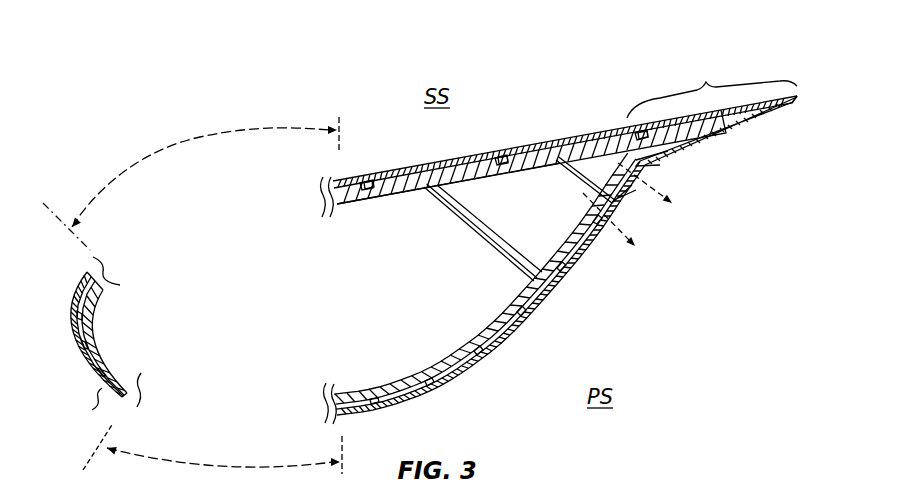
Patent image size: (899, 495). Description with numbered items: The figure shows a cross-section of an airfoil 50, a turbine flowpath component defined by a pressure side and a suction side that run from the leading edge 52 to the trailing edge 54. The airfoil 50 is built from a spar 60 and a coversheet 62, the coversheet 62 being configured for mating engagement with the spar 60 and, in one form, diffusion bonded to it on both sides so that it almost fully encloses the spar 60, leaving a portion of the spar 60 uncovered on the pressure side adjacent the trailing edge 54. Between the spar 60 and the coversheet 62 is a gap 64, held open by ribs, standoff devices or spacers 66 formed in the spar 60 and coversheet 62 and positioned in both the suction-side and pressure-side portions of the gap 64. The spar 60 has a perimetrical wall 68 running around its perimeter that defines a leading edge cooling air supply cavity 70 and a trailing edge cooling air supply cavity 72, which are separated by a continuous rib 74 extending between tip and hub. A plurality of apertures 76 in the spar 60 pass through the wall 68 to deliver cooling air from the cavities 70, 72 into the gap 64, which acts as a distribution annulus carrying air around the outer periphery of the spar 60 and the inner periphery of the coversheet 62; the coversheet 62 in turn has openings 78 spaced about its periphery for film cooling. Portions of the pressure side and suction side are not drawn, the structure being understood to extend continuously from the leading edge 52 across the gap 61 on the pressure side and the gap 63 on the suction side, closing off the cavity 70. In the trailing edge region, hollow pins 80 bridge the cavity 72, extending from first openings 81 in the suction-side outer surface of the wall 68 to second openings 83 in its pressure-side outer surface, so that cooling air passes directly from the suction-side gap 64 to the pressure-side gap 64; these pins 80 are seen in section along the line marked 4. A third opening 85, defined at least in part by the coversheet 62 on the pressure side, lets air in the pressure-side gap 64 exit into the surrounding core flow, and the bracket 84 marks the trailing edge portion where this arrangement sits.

The airfoil 50 is at (120, 42).
The leading edge 52 is at (73, 378).
The trailing edge 54 is at (811, 98).
The spar 60 is at (413, 370).
The gap 61 is at (200, 465).
The coversheet 62 is at (557, 140).
The gap 63 is at (180, 145).
The gap 64 is at (90, 287).
The spacers 66 is at (370, 186).
The perimetrical wall 68 is at (112, 368).
The leading edge cooling air supply cavity 70 is at (301, 309).
The trailing edge cooling air supply cavity 72 is at (534, 196).
The continuous rib 74 is at (473, 240).
The apertures 76 is at (96, 332).
The openings 78 is at (600, 272).
The hollow pins 80 is at (603, 160).
The first openings 81 is at (573, 160).
The second openings 83 is at (617, 197).
The trailing edge portion 84 is at (712, 86).
The third opening 85 is at (660, 168).
The section line 4- 4 is at (636, 212).